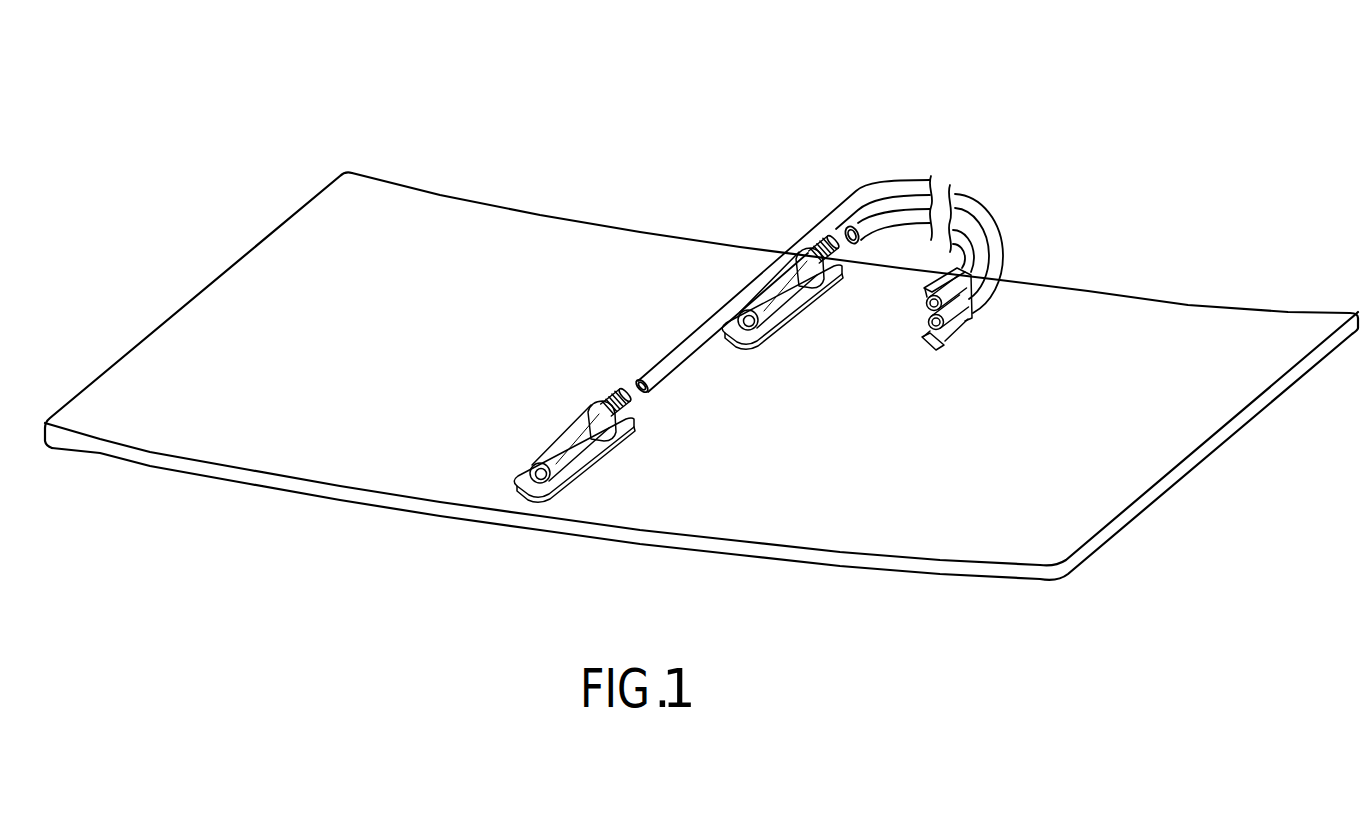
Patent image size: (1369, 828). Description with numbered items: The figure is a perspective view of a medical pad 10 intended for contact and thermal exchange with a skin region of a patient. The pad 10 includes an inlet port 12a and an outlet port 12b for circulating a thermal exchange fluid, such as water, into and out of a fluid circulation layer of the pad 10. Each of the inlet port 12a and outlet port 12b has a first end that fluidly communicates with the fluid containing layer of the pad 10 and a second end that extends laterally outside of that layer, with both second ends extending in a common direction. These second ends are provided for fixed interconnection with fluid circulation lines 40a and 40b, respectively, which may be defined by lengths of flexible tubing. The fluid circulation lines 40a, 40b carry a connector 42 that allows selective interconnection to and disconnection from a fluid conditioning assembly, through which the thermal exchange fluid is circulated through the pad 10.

The medical pad 10 is at (494, 131).
The inlet port 12a is at (567, 437).
The outlet port 12b is at (794, 294).
The fluid circulation line 40a is at (986, 224).
The fluid circulation line 40b is at (990, 285).
The connector 42 is at (953, 331).